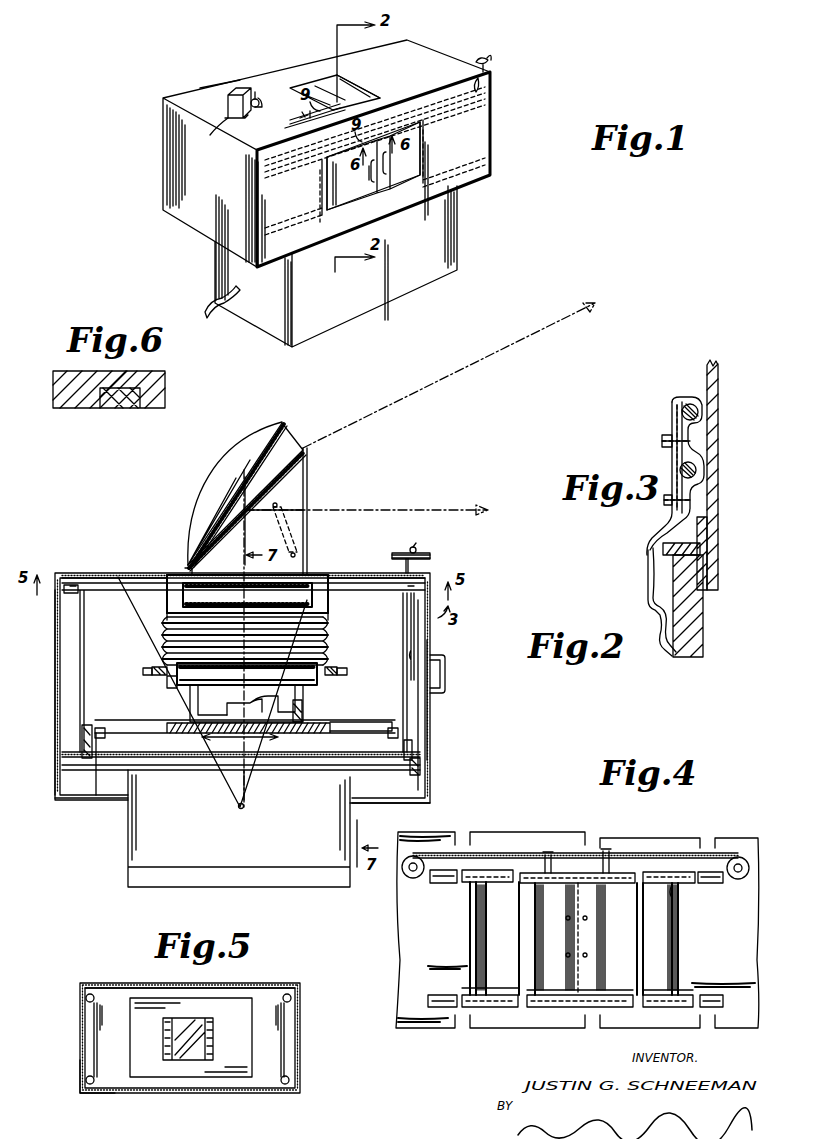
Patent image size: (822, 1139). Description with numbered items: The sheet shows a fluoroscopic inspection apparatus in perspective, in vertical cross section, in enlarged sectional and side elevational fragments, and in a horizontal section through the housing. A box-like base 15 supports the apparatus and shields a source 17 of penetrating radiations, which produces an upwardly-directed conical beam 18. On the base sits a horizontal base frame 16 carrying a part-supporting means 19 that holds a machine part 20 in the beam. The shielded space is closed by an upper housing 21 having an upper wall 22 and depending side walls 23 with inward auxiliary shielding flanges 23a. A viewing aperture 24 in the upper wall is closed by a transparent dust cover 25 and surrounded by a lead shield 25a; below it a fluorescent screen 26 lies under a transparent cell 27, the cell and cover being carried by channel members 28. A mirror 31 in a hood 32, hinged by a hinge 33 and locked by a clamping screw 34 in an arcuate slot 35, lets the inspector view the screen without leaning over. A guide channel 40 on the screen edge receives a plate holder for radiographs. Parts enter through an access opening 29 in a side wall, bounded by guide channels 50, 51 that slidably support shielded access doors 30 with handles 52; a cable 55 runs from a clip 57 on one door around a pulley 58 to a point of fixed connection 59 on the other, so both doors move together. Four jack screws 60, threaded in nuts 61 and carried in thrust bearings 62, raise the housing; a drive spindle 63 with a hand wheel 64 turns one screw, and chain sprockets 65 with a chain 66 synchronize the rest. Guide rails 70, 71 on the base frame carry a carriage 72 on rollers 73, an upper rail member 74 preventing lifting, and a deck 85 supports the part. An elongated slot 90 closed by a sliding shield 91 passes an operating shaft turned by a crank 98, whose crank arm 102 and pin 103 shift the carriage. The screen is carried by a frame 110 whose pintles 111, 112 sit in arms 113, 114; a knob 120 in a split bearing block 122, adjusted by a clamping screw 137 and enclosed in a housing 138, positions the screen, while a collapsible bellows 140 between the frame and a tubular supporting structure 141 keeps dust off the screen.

In FIG. 1, the box-like base 15 is at (462, 235).
In FIG. 2, the box-like base 15 is at (122, 862).
In FIG. 2, the base frame 16 is at (326, 752).
In FIG. 2, the source of penetrating radiations 17 is at (246, 808).
In FIG. 2, the conical beam of penetrating radiations 18 is at (165, 640).
In FIG. 2, the part-supporting means 19 is at (318, 697).
In FIG. 2, the machine part 20 is at (190, 706).
In FIG. 1, the upper housing 21 is at (184, 87).
In FIG. 2, the upper housing 21 is at (356, 570).
In FIG. 1, the upper wall 22 is at (205, 88).
In FIG. 2, the upper wall 22 is at (88, 573).
In FIG. 5, the upper wall 22 is at (300, 1043).
In FIG. 1, the side walls 23 is at (166, 160).
In FIG. 2, the side walls 23 is at (54, 642).
In FIG. 3, the side walls 23 is at (722, 510).
In FIG. 5, the side walls 23 is at (90, 1088).
In FIG. 2, the auxiliary shielding flanges 23a is at (95, 800).
In FIG. 4, the auxiliary shielding flanges 23a is at (420, 805).
In FIG. 1, the viewing aperture 24 is at (360, 84).
In FIG. 2, the viewing aperture 24 is at (310, 562).
In FIG. 1, the transparent dust cover 25 is at (330, 75).
In FIG. 2, the transparent dust cover 25 is at (212, 580).
In FIG. 5, the transparent dust cover 25 is at (208, 1012).
In FIG. 2, the shield 25a is at (118, 576).
In FIG. 5, the shield 25a is at (248, 995).
In FIG. 2, the fluorescent screen 26 is at (215, 690).
In FIG. 2, the transparent cell 27 is at (232, 578).
In FIG. 2, the channel members 28 is at (165, 577).
In FIG. 1, the access opening 29 is at (420, 140).
In FIG. 2, the access opening 29 is at (440, 712).
In FIG. 3, the access opening 29 is at (712, 598).
In FIG. 1, the access doors 30 is at (358, 192).
In FIG. 2, the access doors 30 is at (432, 655).
In FIG. 3, the access doors 30 is at (705, 638).
In FIG. 4, the access doors 30 is at (478, 932).
In FIG. 2, the mirror 31 is at (310, 468).
In FIG. 2, the hood 32 is at (218, 485).
In FIG. 2, the hinge 33 is at (183, 570).
In FIG. 2, the clamping screw 34 is at (312, 535).
In FIG. 2, the arcuate slot 35 is at (318, 500).
In FIG. 2, the guide channel 40 is at (303, 708).
In FIG. 1, the guide channel 50 is at (302, 258).
In FIG. 4, the guide channel 50 is at (490, 870).
In FIG. 1, the guide channel 51 is at (282, 176).
In FIG. 2, the guide channel 51 is at (410, 600).
In FIG. 3, the guide channel 51 is at (655, 600).
In FIG. 4, the guide channel 51 is at (488, 1007).
In FIG. 1, the handles 52 is at (388, 172).
In FIG. 2, the handles 52 is at (448, 670).
In FIG. 1, the cable 55 is at (425, 98).
In FIG. 3, the cable 55 is at (690, 402).
In FIG. 4, the cable 55 is at (672, 853).
In FIG. 1, the clip 57 is at (380, 110).
In FIG. 3, the clip 57 is at (670, 402).
In FIG. 4, the clip 57 is at (548, 852).
In FIG. 1, the pulley 58 is at (488, 88).
In FIG. 4, the pulley 58 is at (740, 856).
In FIG. 4, the point of fixed connection 59 is at (678, 905).
In FIG. 2, the jack screws 60 is at (84, 634).
In FIG. 5, the jack screws 60 is at (292, 995).
In FIG. 2, the nut 61 is at (414, 750).
In FIG. 2, the thrust bearings 62 is at (66, 583).
In FIG. 2, the drive spindle 63 is at (432, 562).
In FIG. 1, the hand wheel 64 is at (488, 56).
In FIG. 2, the hand wheel 64 is at (418, 552).
In FIG. 2, the chain sprocket 65 is at (54, 622).
In FIG. 5, the chain sprocket 65 is at (98, 1060).
In FIG. 6, the chain 66 is at (109, 389).
In FIG. 2, the chain 66 is at (396, 555).
In FIG. 5, the chain 66 is at (222, 987).
In FIG. 2, the guide rail 70 is at (410, 768).
In FIG. 2, the guide rail 71 is at (98, 772).
In FIG. 2, the carriage 72 is at (370, 718).
In FIG. 2, the rollers 73 is at (108, 735).
In FIG. 2, the upper rail member 74 is at (88, 724).
In FIG. 2, the deck 85 is at (254, 741).
In FIG. 1, the elongated slot 90 is at (288, 122).
In FIG. 1, the shield 91 is at (286, 130).
In FIG. 1, the crank 98 is at (300, 116).
In FIG. 2, the crank arm 102 is at (320, 720).
In FIG. 2, the pin 103 is at (262, 765).
In FIG. 2, the frame 110 is at (168, 685).
In FIG. 2, the pintle 111 is at (150, 670).
In FIG. 2, the pintle 112 is at (332, 666).
In FIG. 2, the arm 113 is at (143, 674).
In FIG. 2, the arm 114 is at (345, 668).
In FIG. 1, the knob 120 is at (262, 94).
In FIG. 1, the split bearing block 122 is at (257, 92).
In FIG. 1, the clamping screw 137 is at (240, 90).
In FIG. 1, the housing 138 is at (225, 108).
In FIG. 2, the collapsible bellows 140 is at (166, 620).
In FIG. 2, the tubular supporting structure 141 is at (330, 616).